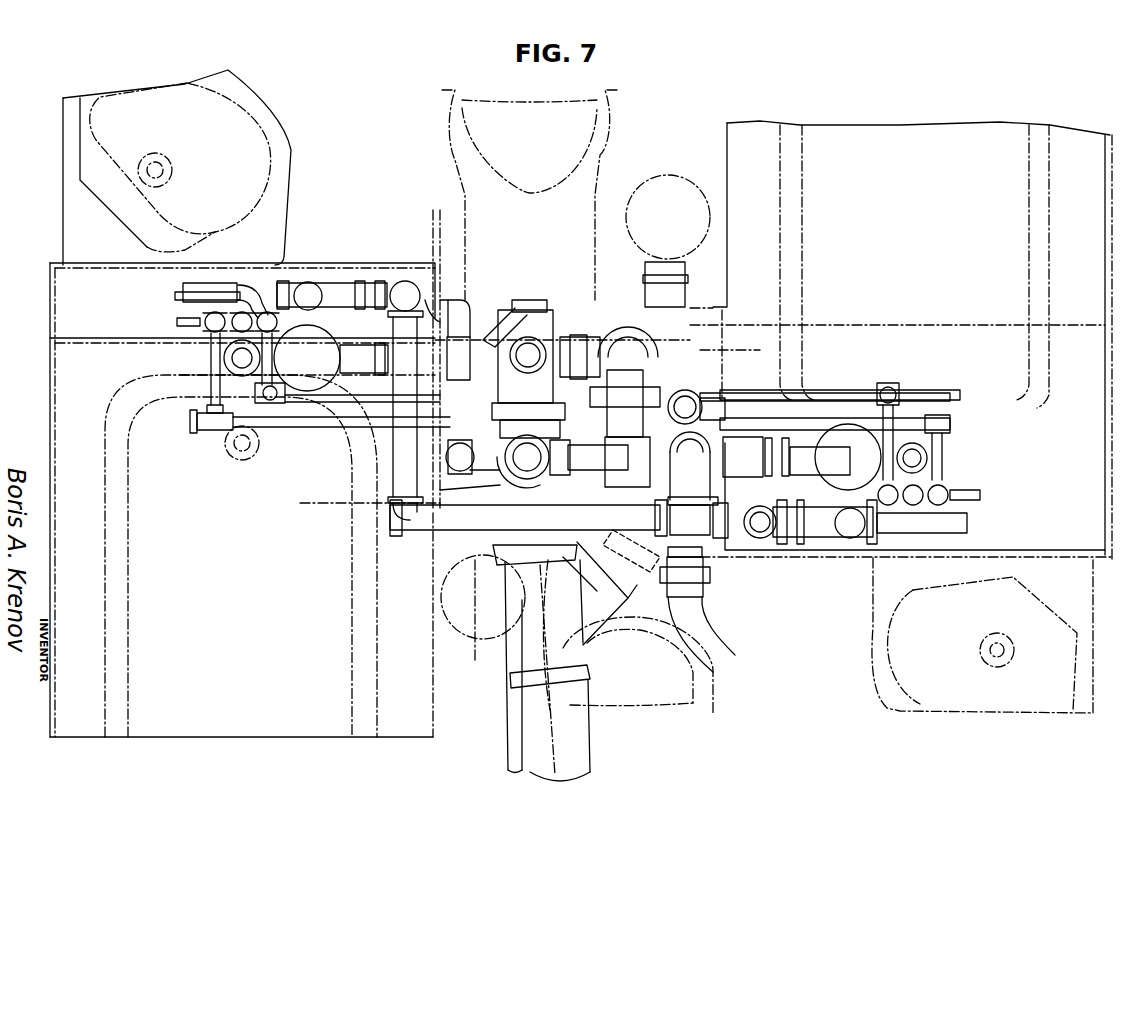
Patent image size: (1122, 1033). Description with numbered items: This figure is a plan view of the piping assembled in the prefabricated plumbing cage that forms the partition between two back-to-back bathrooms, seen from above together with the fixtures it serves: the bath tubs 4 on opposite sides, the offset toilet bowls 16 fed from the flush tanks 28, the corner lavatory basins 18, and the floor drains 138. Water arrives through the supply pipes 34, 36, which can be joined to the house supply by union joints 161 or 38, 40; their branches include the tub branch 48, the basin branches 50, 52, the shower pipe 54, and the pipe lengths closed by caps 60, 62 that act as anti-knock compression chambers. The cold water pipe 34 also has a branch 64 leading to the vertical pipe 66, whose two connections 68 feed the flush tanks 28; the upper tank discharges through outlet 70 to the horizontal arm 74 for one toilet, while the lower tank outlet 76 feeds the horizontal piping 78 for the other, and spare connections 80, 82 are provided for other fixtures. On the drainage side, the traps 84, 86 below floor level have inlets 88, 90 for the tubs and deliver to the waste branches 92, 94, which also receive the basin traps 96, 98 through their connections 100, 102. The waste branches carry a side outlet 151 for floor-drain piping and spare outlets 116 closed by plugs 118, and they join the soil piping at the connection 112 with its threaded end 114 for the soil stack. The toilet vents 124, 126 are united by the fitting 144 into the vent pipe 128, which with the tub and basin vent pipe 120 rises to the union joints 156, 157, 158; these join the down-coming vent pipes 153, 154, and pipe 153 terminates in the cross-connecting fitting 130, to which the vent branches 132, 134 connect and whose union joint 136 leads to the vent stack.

The bath tub 4 is at (725, 132).
The toilet bowl 16 is at (430, 105).
The lavatory basin 18 is at (253, 102).
The flush tank 28 is at (725, 350).
The cold water supply pipe 34 is at (327, 405).
The water supply pipe 36 is at (298, 428).
The union joint 38 is at (925, 392).
The union joint 40 is at (960, 412).
The branch 48 is at (210, 336).
The branch 50 is at (175, 295).
The branch 52 is at (177, 322).
The pipe 54 is at (247, 312).
The cap 60 is at (268, 312).
The cap 62 is at (216, 312).
The branch 64 is at (490, 475).
The vertical pipe 66 is at (455, 455).
The connection 68 is at (470, 340).
The outlet 70 is at (715, 405).
The horizontal arm 74 is at (630, 590).
The outlet 76 is at (535, 350).
The horizontal piping 78 is at (535, 305).
The spare connection 80 is at (258, 446).
The spare connection 82 is at (195, 424).
The trap 84 is at (296, 368).
The trap 86 is at (837, 467).
The inlet 88 is at (235, 355).
The inlet 90 is at (928, 460).
The waste branch 92 is at (372, 345).
The waste branch 94 is at (752, 462).
The P-trap 96 is at (312, 290).
The P-trap 98 is at (838, 540).
The connection 100 is at (180, 286).
The connection 102 is at (968, 530).
The connection 112 is at (592, 645).
The threaded end 114 is at (575, 700).
The side outlet 116 is at (492, 320).
The plug 118 is at (490, 310).
The vent pipe 120 is at (405, 282).
The toilet vent 124 is at (562, 459).
The toilet vent 126 is at (625, 350).
The vent pipe 128 is at (693, 480).
The cross-connecting fitting 130 is at (715, 540).
The vent branch 132 is at (432, 528).
The vent branch 134 is at (770, 543).
The union joint 136 is at (705, 600).
The floor drain 138 is at (680, 175).
The fitting 144 is at (688, 392).
The side outlet 151 is at (472, 335).
The vent pipe 153 is at (460, 495).
The vent pipe 154 is at (680, 300).
The union joint 156 is at (735, 425).
The union joint 157 is at (420, 300).
The union joint 158 is at (770, 510).
The union joint 161 is at (470, 610).